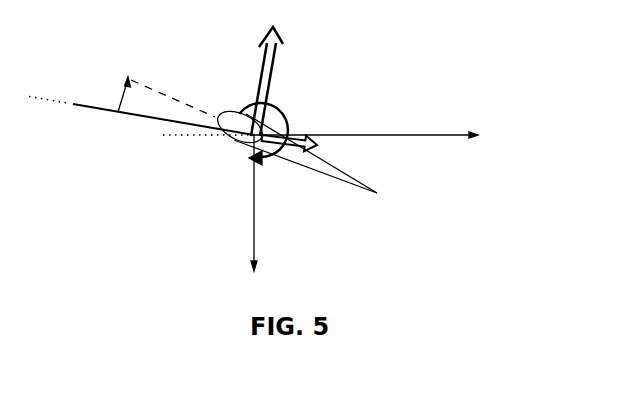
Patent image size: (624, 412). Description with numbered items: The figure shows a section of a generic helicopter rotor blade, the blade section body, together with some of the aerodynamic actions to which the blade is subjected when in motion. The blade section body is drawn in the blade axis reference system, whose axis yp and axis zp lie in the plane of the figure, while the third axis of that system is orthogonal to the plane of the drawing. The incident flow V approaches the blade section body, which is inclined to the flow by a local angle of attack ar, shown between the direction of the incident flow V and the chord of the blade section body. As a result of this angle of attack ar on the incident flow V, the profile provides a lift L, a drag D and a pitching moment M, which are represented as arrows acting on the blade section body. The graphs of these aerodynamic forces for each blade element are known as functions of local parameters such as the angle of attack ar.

The lift L is at (267, 81).
The drag D is at (294, 131).
The pitching moment M is at (267, 131).
The incident flow V is at (141, 117).
The angle of attack ar is at (154, 97).
The y_P axis yp is at (366, 123).
The z_P axis zp is at (269, 203).
The blade section body is at (295, 149).